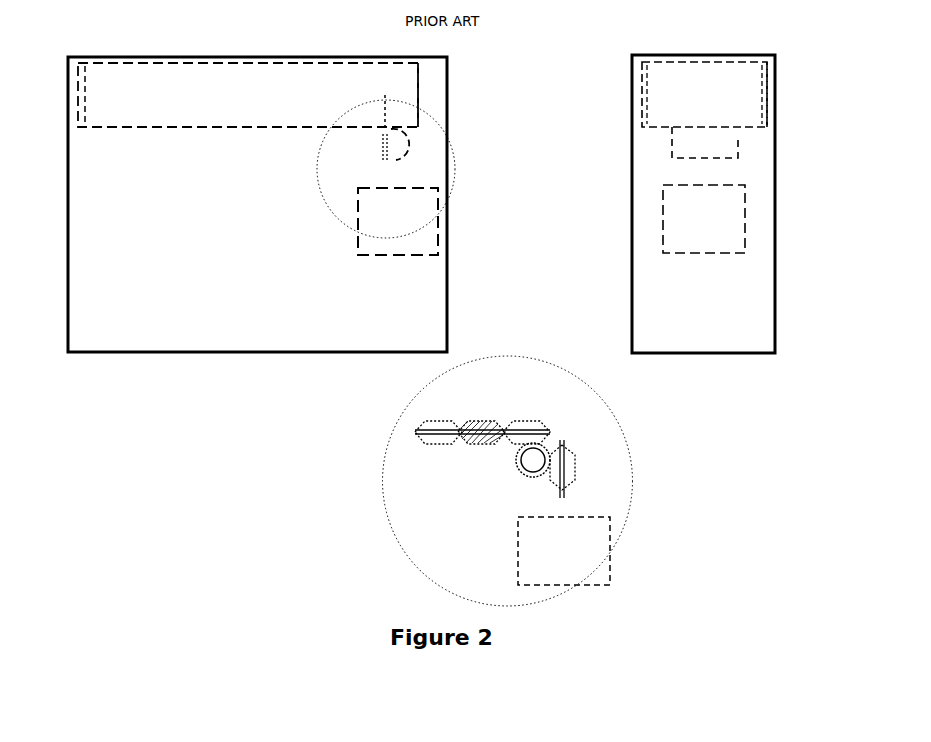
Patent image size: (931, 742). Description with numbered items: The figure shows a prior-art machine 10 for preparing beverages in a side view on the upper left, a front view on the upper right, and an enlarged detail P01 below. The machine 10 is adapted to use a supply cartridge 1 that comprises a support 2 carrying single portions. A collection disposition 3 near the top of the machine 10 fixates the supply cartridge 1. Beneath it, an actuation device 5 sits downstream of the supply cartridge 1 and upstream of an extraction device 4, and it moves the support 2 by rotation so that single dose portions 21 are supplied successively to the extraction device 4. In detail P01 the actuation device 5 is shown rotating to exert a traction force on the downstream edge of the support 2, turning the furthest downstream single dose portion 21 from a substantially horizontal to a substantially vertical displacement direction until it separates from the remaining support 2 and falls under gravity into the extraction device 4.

The machine for preparing beverages 10 is at (401, 203).
The supply cartridge 1 is at (368, 72).
The collection disposition 3 is at (604, 94).
The actuation device 5 is at (545, 308).
The extraction device 4 is at (551, 385).
The detail P01 is at (476, 353).
The support of single portions 2 is at (482, 423).
The single dose portion 21 is at (578, 469).